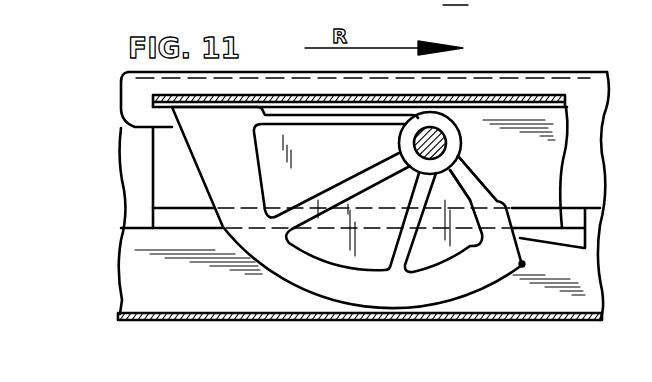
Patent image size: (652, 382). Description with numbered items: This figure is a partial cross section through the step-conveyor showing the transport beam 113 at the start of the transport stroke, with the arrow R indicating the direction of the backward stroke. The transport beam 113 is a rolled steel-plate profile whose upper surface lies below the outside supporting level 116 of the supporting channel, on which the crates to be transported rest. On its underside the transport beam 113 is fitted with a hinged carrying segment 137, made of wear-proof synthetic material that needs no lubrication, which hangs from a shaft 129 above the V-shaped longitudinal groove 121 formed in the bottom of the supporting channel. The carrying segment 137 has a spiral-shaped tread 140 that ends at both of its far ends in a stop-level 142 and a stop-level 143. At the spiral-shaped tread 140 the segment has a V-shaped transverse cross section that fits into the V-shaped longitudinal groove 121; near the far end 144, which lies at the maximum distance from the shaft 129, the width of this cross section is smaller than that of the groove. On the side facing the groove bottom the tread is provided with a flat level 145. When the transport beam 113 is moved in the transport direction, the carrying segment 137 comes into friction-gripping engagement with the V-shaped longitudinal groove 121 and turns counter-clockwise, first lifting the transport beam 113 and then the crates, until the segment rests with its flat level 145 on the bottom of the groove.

The transport beam 113 is at (548, 98).
The outside supporting level 116 is at (504, 62).
The V-shaped longitudinal groove 121 is at (530, 306).
The shaft 129 is at (438, 143).
The carrying segment 137 is at (492, 178).
The spiral-shaped tread 140 is at (332, 278).
The stop-level 142 is at (591, 254).
The stop-level 143 is at (207, 107).
The far end of the spiral-shaped tread 144 is at (225, 162).
The flat level 145 is at (123, 128).